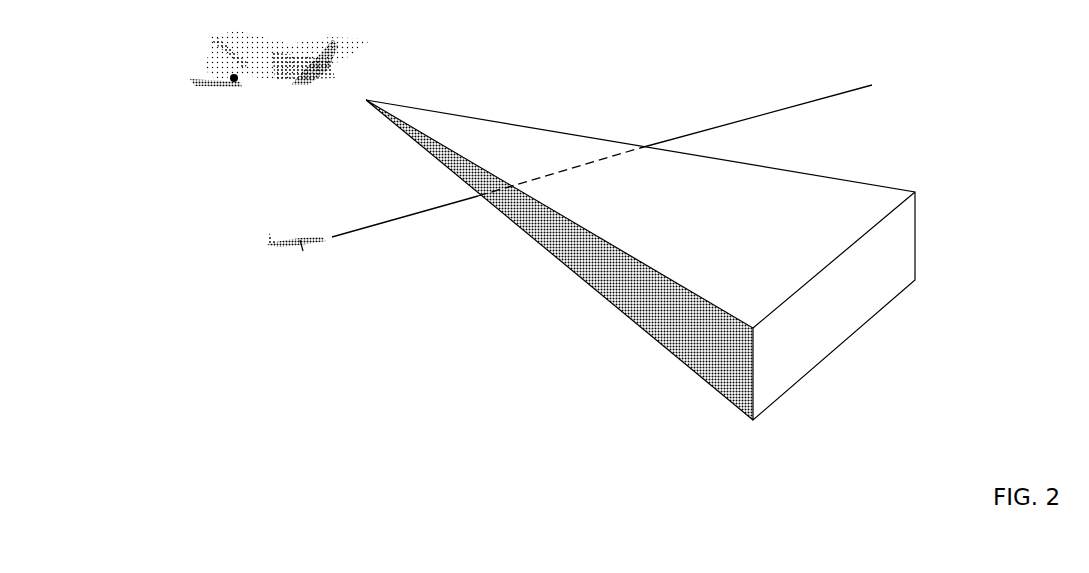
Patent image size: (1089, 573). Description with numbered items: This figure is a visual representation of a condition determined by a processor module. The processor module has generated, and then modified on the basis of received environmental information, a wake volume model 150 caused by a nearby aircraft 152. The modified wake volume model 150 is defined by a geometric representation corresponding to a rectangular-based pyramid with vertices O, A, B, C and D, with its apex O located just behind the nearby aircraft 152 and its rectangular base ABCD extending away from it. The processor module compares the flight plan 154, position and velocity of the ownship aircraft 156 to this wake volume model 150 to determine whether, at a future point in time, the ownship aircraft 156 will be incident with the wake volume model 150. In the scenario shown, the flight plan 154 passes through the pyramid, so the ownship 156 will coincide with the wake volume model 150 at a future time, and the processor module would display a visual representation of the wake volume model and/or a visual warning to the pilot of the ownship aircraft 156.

The wake volume model 150 is at (585, 282).
The nearby aircraft 152 is at (196, 82).
The flight plan 154 is at (458, 203).
The ownship aircraft 156 is at (273, 246).